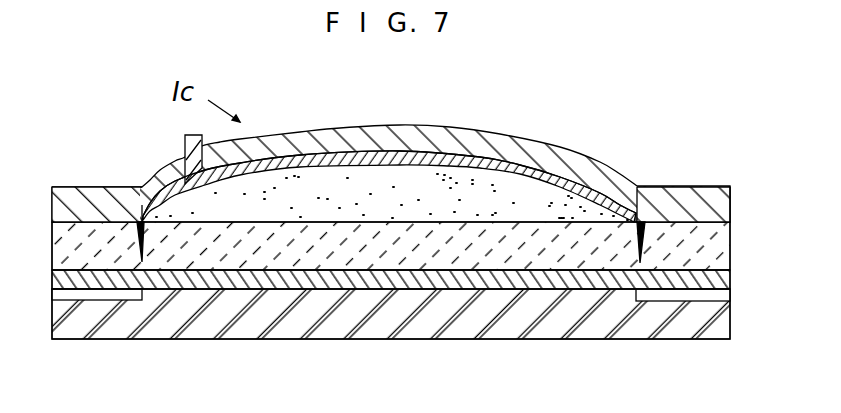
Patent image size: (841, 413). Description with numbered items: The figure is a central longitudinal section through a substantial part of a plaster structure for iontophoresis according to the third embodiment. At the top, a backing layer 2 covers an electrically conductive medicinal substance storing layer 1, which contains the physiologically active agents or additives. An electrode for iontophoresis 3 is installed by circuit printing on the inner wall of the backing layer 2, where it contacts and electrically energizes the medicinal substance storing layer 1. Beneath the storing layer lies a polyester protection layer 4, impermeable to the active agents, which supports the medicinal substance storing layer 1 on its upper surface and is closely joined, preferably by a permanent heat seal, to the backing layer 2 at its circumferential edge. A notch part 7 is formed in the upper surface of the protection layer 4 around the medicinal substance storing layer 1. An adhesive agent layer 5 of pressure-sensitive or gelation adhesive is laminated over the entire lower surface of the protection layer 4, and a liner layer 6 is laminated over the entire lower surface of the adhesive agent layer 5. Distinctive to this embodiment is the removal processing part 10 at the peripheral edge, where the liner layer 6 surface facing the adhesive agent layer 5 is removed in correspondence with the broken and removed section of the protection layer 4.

The electrical conductive medicinal substance storing layer 1 is at (403, 185).
The backing layer 2 is at (697, 203).
The electrode for iontophoresis 3 is at (498, 163).
The protection layer 4 is at (707, 245).
The adhesive agent layer 5 is at (720, 282).
The liner layer 6 is at (713, 323).
The notch part 7 is at (138, 222).
The removal processing part 10 is at (108, 297).